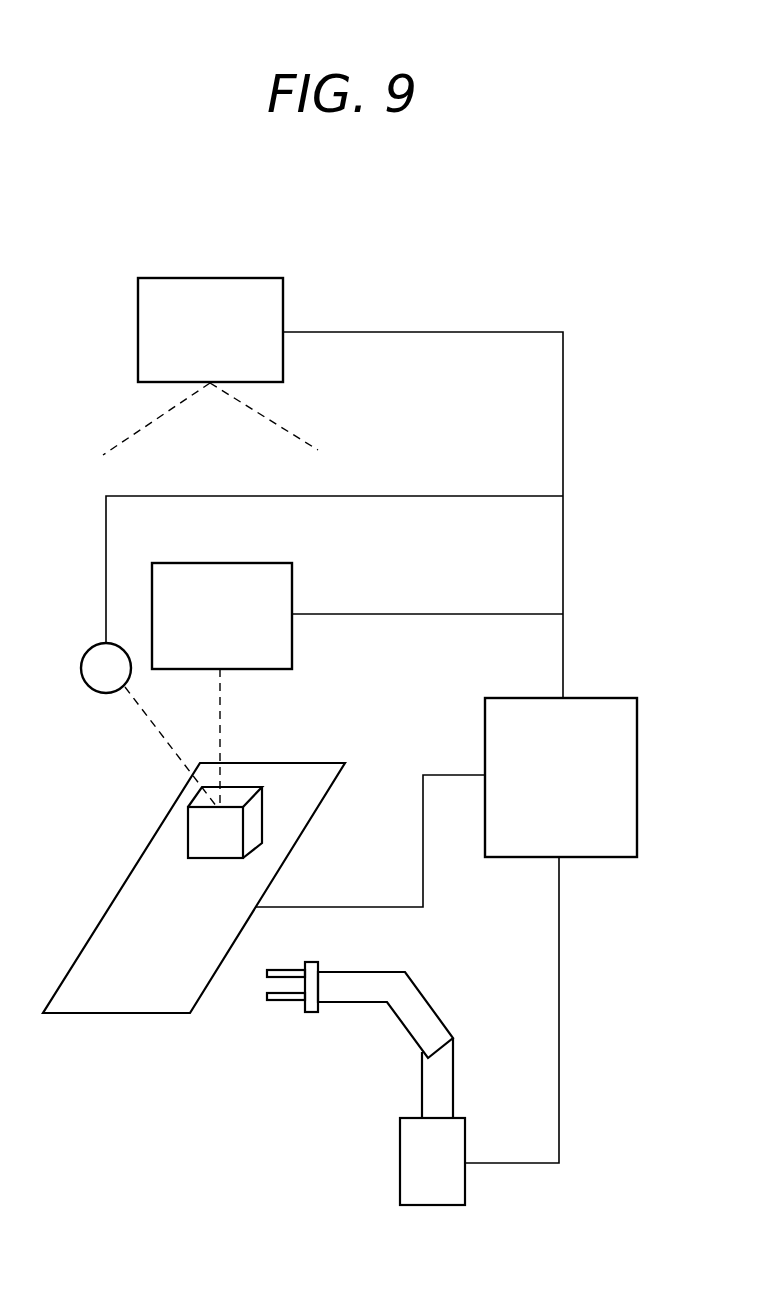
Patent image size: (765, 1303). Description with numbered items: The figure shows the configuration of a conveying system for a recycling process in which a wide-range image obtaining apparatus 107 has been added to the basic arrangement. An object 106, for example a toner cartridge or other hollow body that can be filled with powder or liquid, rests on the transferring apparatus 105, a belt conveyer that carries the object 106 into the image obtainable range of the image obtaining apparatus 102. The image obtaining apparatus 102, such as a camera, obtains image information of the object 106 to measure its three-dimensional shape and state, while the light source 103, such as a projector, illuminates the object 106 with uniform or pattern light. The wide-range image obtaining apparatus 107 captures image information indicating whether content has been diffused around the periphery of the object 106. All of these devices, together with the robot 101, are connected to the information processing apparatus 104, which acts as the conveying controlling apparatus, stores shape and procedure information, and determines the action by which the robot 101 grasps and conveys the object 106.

The robot 101 is at (400, 1173).
The image obtaining apparatus 102 is at (293, 583).
The light source 103 is at (88, 645).
The information processing apparatus 104 is at (578, 698).
The transferring apparatus 105 is at (103, 1014).
The object 106 is at (187, 837).
The wide-range image obtaining apparatus 107 is at (211, 277).